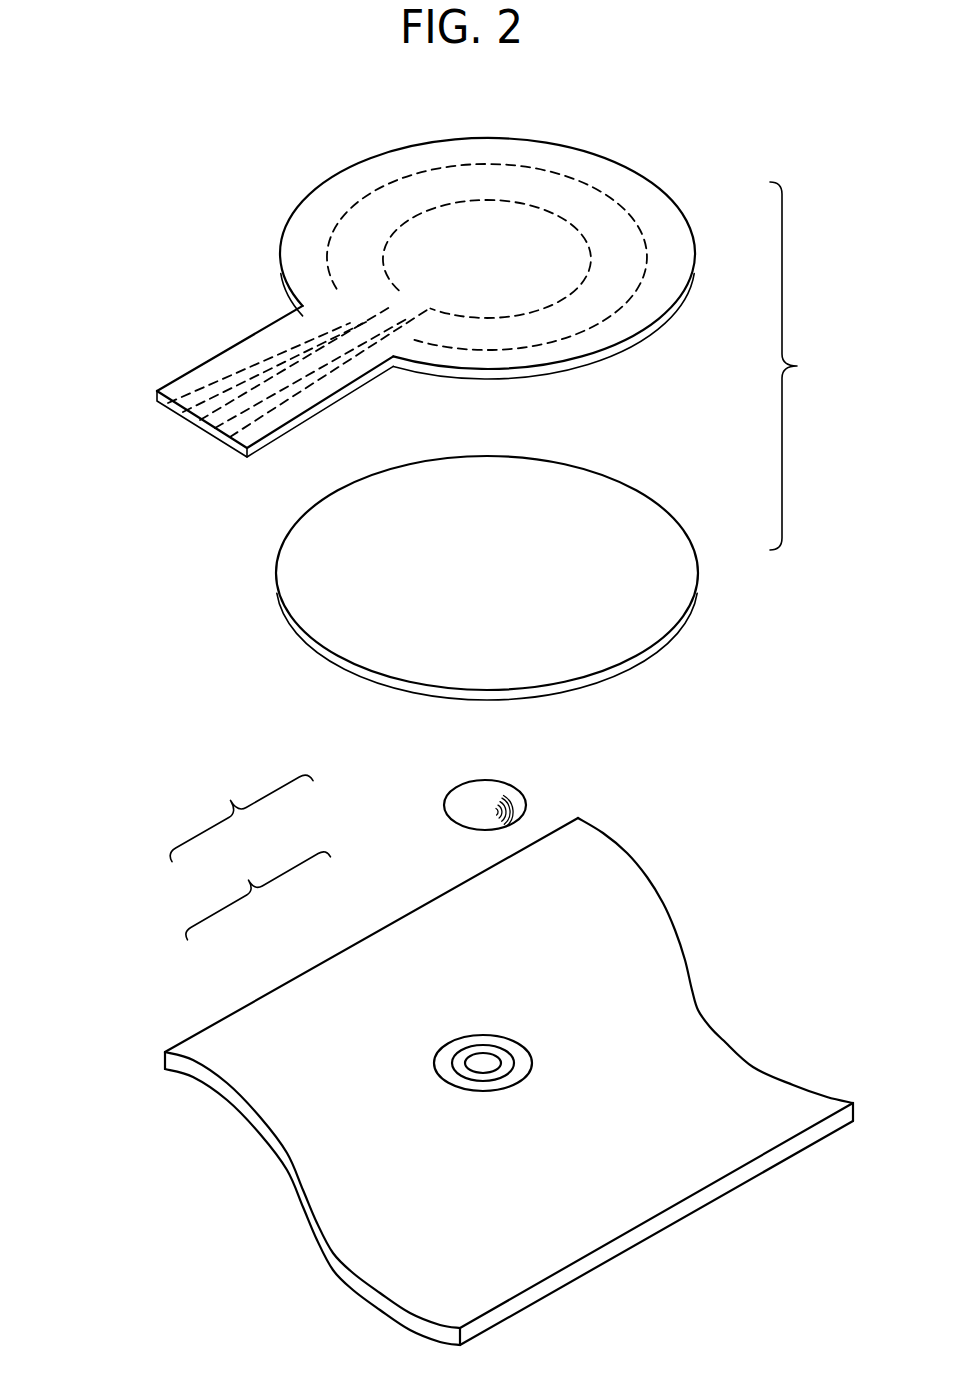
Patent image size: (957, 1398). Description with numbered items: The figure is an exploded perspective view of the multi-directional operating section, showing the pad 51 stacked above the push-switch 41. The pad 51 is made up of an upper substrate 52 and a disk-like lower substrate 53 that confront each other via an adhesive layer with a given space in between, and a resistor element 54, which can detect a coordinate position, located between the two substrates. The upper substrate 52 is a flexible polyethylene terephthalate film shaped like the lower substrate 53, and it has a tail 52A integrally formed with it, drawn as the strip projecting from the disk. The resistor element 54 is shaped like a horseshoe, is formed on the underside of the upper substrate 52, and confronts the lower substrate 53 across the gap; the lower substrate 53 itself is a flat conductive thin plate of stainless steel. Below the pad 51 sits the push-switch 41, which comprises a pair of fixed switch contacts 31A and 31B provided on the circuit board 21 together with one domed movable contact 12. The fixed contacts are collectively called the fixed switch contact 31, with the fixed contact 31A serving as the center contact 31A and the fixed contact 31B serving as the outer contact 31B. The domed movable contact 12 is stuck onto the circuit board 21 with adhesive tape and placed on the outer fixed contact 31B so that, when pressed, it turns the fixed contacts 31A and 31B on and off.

The pad 51 is at (804, 366).
The upper substrate 52 is at (678, 235).
The tail 52A is at (193, 375).
The resistor element 54 is at (615, 290).
The lower substrate 53 is at (672, 542).
The push-switch 41 is at (241, 815).
The domed movable contact 12 is at (457, 793).
The fixed switch contact 31 is at (258, 891).
The center contact 31A is at (483, 1062).
The outer contact 31B is at (450, 1052).
The circuit board 21 is at (651, 1195).